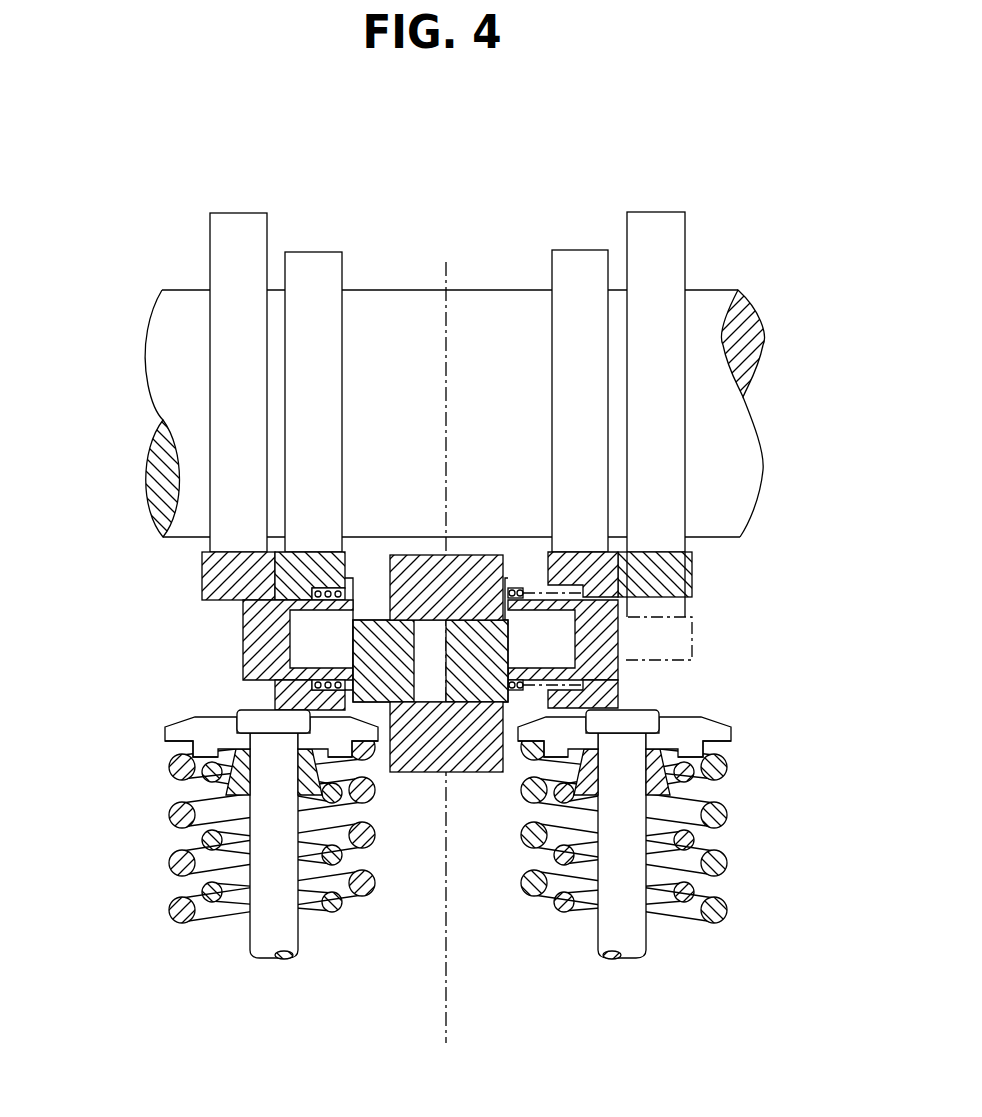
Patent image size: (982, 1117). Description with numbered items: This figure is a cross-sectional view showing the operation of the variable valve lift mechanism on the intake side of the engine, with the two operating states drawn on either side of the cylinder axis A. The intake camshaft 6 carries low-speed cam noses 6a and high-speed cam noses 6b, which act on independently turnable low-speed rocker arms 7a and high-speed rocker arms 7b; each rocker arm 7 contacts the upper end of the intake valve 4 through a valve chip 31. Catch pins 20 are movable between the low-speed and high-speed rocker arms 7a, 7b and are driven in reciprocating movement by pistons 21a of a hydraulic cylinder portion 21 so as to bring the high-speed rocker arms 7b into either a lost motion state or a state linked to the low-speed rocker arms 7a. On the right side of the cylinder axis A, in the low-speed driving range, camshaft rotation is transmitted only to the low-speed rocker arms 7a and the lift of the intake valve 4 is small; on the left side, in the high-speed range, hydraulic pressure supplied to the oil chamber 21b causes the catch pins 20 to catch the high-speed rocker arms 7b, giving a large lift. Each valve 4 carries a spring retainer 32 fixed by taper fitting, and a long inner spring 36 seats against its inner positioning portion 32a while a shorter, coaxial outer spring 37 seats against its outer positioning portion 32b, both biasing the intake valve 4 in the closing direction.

The intake valve 4 is at (240, 940).
The intake camshaft 6 is at (183, 251).
The low-speed cam nose 6a is at (315, 251).
The high-speed cam nose 6b is at (240, 212).
The rocker arm 7 is at (447, 564).
The low-speed rocker arm 7a is at (315, 552).
The high-speed rocker arm 7b is at (233, 552).
The catch pin 20 is at (243, 637).
The hydraulic cylinder portion 21 is at (470, 779).
The piston 21a is at (440, 687).
The oil chamber 21b is at (430, 637).
The valve chip 31 is at (240, 707).
The spring retainer 32 is at (180, 717).
The inner positioning portion 32a is at (225, 778).
The outer positioning portion 32b is at (167, 745).
The inner spring 36 is at (203, 840).
The outer spring 37 is at (172, 867).
The cylinder axis A is at (446, 1012).